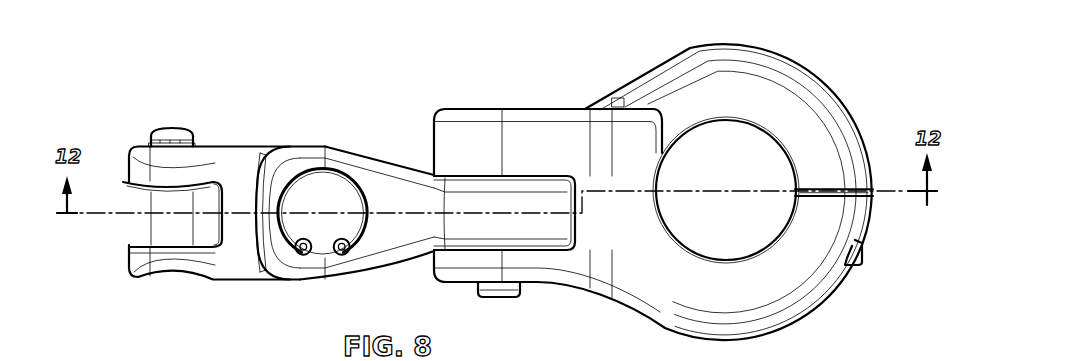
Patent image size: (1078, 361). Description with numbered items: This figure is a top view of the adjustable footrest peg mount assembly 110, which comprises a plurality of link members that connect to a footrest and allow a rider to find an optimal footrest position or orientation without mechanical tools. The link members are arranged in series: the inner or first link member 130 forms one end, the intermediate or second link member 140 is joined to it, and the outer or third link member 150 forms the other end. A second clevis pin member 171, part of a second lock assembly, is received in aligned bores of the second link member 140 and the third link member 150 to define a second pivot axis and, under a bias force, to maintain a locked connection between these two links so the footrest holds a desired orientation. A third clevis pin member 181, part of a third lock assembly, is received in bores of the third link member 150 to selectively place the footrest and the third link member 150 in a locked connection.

The adjustable footrest peg mount assembly 110 is at (78, 60).
The first link member 130 is at (837, 270).
The second link member 140 is at (362, 160).
The third link member 150 is at (228, 253).
The second clevis pin member 171 is at (510, 290).
The third clevis pin member 181 is at (172, 136).